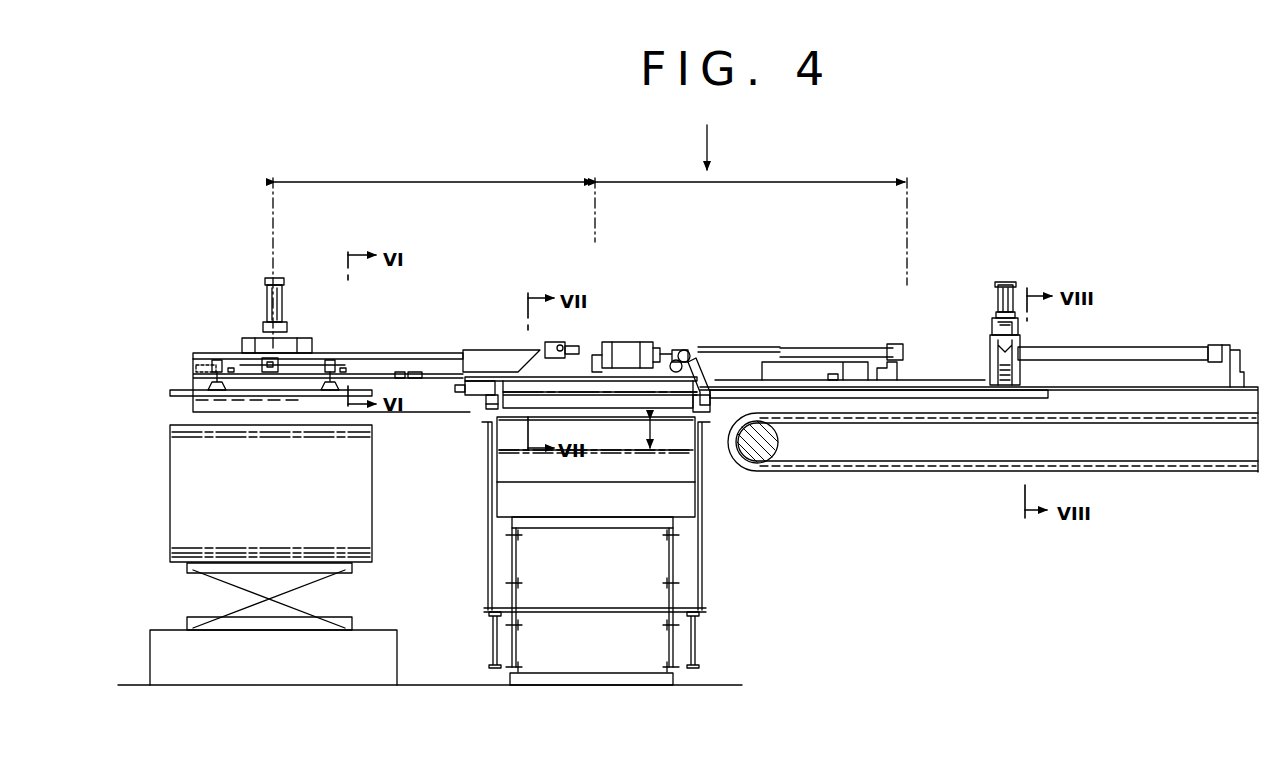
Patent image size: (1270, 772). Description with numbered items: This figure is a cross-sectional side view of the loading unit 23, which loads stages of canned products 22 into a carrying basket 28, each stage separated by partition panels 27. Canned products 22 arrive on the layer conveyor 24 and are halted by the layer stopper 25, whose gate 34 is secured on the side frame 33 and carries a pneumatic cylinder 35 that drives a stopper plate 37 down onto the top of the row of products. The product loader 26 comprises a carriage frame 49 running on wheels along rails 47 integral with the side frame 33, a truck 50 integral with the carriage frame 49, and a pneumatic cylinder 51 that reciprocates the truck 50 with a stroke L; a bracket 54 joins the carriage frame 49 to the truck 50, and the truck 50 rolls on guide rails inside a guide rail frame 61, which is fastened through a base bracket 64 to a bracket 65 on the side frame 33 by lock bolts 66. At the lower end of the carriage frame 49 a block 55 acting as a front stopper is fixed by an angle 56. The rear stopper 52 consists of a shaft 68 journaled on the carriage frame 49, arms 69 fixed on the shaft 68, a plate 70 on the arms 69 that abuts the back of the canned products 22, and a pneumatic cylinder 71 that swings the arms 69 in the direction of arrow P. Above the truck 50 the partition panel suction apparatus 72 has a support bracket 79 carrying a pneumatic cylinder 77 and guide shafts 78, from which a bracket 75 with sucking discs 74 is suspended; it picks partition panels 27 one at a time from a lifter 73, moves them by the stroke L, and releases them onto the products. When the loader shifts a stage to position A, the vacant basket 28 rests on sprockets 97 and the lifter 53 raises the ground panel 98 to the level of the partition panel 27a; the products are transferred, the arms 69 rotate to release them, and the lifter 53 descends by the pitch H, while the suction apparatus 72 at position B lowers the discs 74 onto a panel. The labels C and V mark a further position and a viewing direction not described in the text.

The canned products 22 is at (510, 497).
The loading unit 23 is at (785, 304).
The layer conveyor 24 is at (1178, 473).
The layer stopper 25 is at (990, 299).
The product loader 26 is at (650, 327).
The partition panels 27 is at (172, 555).
The partition panel 27a is at (668, 435).
The carrying basket 28 is at (490, 573).
The side frame 33 is at (1105, 392).
The gate 34 is at (988, 325).
The pneumatic cylinder 35 is at (1008, 282).
The stopper plate 37 is at (985, 388).
The rails 47 is at (776, 392).
The carriage frame 49 is at (455, 402).
The truck 50 is at (423, 349).
The pneumatic cylinder 51 is at (1183, 350).
The rear stopper 52 is at (723, 385).
The lifter 53 is at (697, 645).
The bracket 54 is at (520, 355).
The block 55 is at (508, 415).
The angle 56 is at (490, 402).
The guide rail frame 61 is at (863, 378).
The base bracket 64 is at (663, 334).
The bracket 65 is at (415, 378).
The lock bolts 66 is at (400, 372).
The shaft 68 is at (689, 350).
The arms 69 is at (716, 371).
The plate 70 is at (712, 415).
The pneumatic cylinder 71 is at (624, 344).
The partition panel suction apparatus 72 is at (248, 335).
The lifter 73 is at (187, 625).
The sucking discs 74 is at (198, 390).
The bracket 75 is at (215, 365).
The pneumatic cylinder 77 is at (281, 278).
The guide shafts 78 is at (270, 305).
The support bracket 79 is at (243, 352).
The sprockets 97 is at (493, 640).
The ground panel 98 is at (510, 518).
The position A is at (595, 218).
The position B is at (273, 208).
The position C is at (907, 240).
The stroke L is at (590, 168).
The view direction V is at (717, 146).
The pitch H is at (635, 433).
The arrow P is at (770, 423).